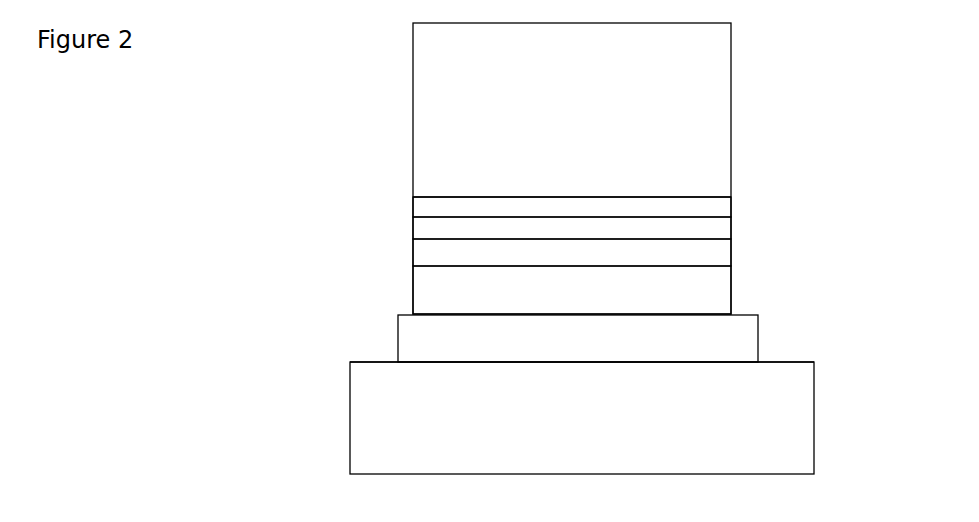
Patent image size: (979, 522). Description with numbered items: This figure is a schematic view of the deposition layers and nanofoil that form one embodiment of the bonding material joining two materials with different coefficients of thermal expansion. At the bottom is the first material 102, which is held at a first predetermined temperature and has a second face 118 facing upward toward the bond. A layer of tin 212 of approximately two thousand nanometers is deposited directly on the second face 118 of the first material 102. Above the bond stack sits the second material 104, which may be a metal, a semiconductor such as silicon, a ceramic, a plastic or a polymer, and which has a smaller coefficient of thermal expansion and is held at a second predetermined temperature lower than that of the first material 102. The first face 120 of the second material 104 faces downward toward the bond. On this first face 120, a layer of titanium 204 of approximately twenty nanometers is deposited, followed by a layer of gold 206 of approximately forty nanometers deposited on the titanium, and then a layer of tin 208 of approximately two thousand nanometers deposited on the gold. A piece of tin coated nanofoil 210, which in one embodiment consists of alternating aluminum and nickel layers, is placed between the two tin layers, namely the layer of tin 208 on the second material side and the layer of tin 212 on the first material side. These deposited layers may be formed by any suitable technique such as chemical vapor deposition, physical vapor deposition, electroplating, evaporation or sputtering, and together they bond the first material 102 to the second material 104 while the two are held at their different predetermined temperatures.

The first material 102 is at (797, 422).
The second face of the first material 118 is at (372, 365).
The layer of tin 212 is at (407, 333).
The second material 104 is at (713, 63).
The first face of the second material 120 is at (690, 197).
The layer of titanium 204 is at (717, 208).
The layer of gold 206 is at (428, 227).
The layer of tin 208 is at (717, 256).
The nanofoil 210 is at (418, 287).